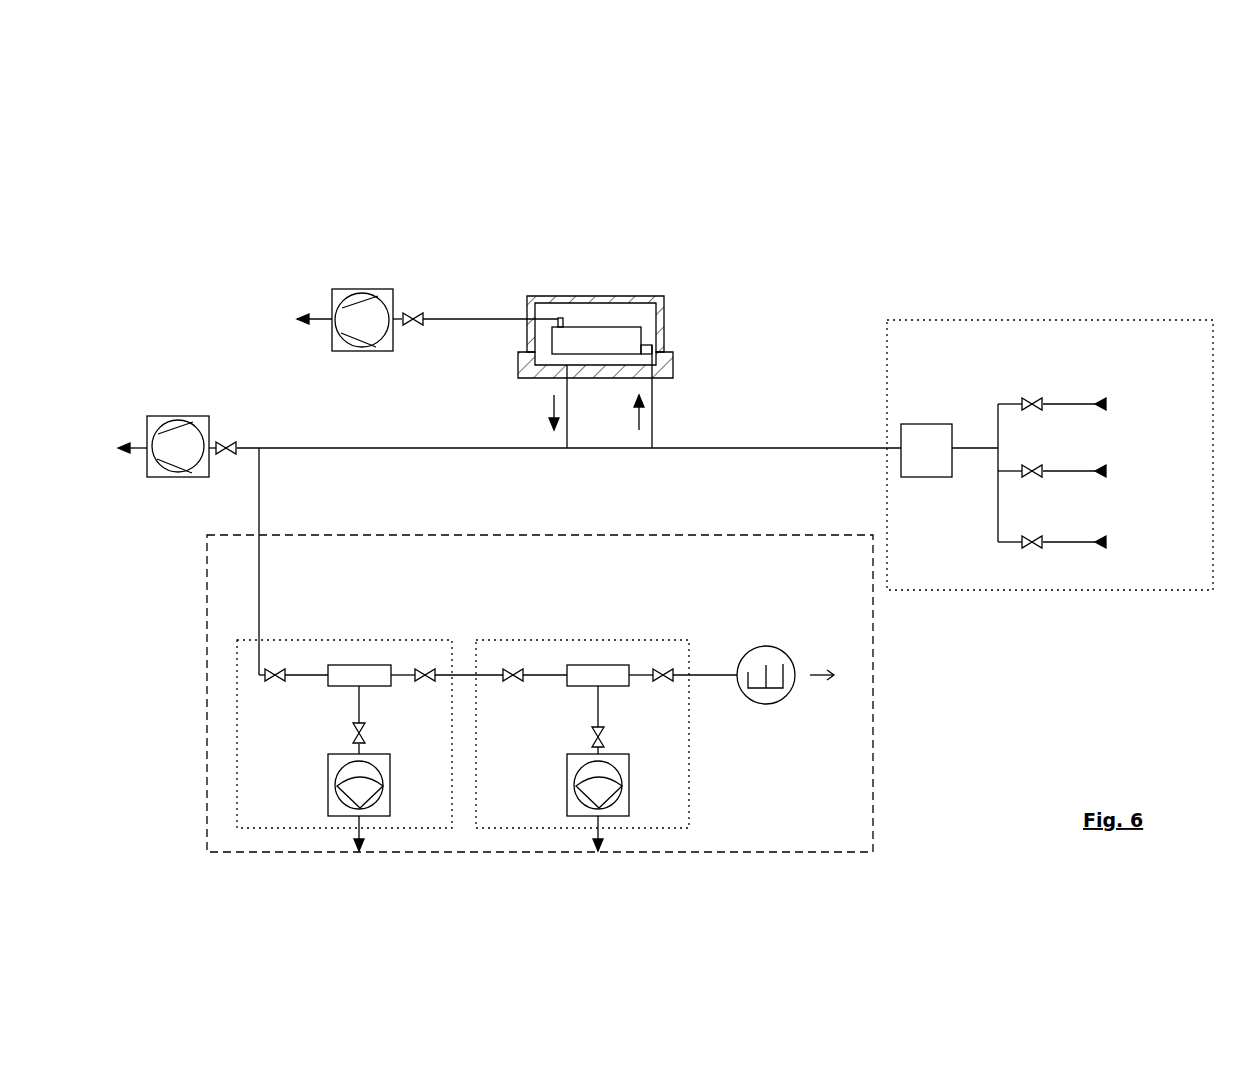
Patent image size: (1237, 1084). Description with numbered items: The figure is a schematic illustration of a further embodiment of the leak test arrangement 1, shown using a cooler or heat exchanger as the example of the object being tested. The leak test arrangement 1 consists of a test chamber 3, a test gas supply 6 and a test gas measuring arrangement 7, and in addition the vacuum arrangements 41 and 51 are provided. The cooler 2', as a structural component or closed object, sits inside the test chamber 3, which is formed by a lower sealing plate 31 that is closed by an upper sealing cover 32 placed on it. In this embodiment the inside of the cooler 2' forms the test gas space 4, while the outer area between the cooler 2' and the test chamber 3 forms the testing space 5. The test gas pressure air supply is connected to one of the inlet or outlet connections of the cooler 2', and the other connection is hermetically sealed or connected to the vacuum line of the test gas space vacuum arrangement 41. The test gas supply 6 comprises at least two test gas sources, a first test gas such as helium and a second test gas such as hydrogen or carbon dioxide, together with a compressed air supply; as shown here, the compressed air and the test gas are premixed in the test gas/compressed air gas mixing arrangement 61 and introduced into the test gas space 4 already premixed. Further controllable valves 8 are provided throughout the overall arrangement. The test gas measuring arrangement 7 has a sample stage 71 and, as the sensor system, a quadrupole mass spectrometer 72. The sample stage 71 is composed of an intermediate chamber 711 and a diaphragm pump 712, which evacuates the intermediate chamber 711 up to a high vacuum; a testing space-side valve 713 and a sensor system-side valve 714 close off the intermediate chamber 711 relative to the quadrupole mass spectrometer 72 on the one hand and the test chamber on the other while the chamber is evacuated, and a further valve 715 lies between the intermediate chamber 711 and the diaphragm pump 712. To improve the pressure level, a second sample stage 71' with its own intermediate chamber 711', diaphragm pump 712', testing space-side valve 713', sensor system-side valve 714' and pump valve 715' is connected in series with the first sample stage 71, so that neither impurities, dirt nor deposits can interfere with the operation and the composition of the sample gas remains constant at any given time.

The leak test arrangement 1 is at (868, 230).
The cooler 2' is at (654, 293).
The test chamber 3 is at (551, 279).
The lower sealing plate 31 is at (518, 365).
The upper sealing cover 32 is at (600, 296).
The test gas space 4 is at (558, 340).
The testing space 5 is at (650, 330).
The test gas space vacuum arrangement 41 is at (370, 289).
The vacuum arrangement 51 is at (180, 416).
The test gas supply 6 is at (1124, 320).
The test gas/compressed air gas mixing arrangement 61 is at (908, 443).
The test gas measuring arrangement 7 is at (880, 752).
The sample stage 71 is at (310, 714).
The second sample stage 71' is at (614, 672).
The intermediate chamber 711 is at (359, 637).
The intermediate chamber 711' is at (600, 637).
The diaphragm pump 712 is at (320, 782).
The diaphragm pump 712' is at (559, 783).
The testing space-side valve 713 is at (290, 629).
The testing space-side valve 713' is at (531, 629).
The sensor system-side valve 714 is at (448, 634).
The sensor system-side valve 714' is at (689, 634).
The pump valve 715 is at (241, 706).
The pump valve 715' is at (672, 764).
The quadrupole mass spectrometer 72 is at (775, 703).
The controllable valves 8 is at (417, 312).